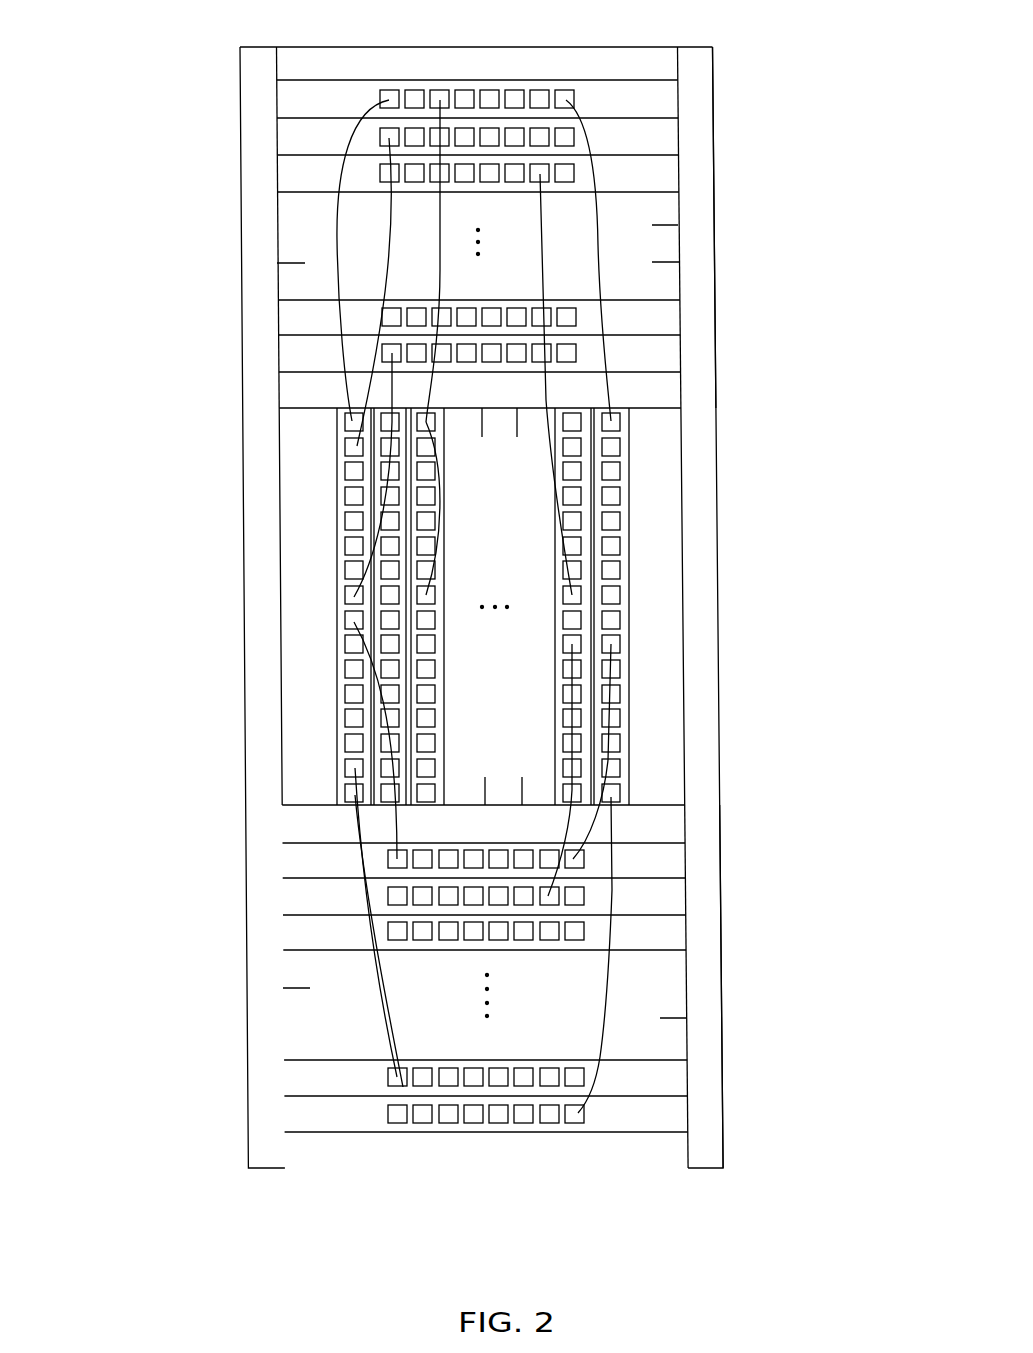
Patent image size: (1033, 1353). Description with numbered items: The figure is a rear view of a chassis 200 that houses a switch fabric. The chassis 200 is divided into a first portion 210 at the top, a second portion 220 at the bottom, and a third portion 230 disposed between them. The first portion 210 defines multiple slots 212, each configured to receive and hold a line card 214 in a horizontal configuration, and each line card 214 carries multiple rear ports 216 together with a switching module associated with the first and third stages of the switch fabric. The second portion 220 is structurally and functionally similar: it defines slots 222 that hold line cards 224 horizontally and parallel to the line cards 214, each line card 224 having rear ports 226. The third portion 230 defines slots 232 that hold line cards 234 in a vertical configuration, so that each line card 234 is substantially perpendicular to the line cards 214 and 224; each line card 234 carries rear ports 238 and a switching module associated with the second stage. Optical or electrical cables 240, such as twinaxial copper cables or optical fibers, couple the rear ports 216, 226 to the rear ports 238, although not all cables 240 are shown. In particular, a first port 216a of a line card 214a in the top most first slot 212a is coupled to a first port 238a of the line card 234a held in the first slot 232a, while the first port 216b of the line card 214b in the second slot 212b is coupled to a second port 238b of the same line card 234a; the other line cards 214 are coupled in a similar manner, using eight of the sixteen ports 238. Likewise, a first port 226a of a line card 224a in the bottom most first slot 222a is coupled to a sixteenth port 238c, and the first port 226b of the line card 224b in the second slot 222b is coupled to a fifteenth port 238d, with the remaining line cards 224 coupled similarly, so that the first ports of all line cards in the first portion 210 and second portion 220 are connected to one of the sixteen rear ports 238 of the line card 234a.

The chassis 200 is at (194, 43).
The first portion 210 is at (303, 245).
The slot 212 is at (667, 240).
The first slot 212a is at (680, 97).
The second slot 212b is at (276, 137).
The line card 214 is at (307, 310).
The line card 214a is at (305, 105).
The line card 214b is at (667, 357).
The rear port 216 is at (516, 101).
The first port 216a is at (387, 92).
The first port 216b is at (382, 348).
The second portion 220 is at (313, 988).
The slot 222 is at (688, 898).
The first slot 222a is at (662, 1130).
The second slot 222b is at (688, 1075).
The line card 224 is at (670, 851).
The line card 224a is at (678, 1112).
The line card 224b is at (308, 1085).
The rear port 226 is at (388, 898).
The first port 226a is at (395, 1112).
The first port 226b is at (403, 1087).
The third portion 230 is at (656, 622).
The slot 232 is at (628, 453).
The first slot 232a is at (337, 562).
The line card 234 is at (628, 553).
The line card 234a is at (342, 674).
The rear port 238 is at (610, 491).
The first port 238a is at (345, 419).
The second port 238b is at (345, 448).
The sixteenth port 238c is at (345, 789).
The fifteenth port 238d is at (345, 764).
The cable 240 is at (590, 155).